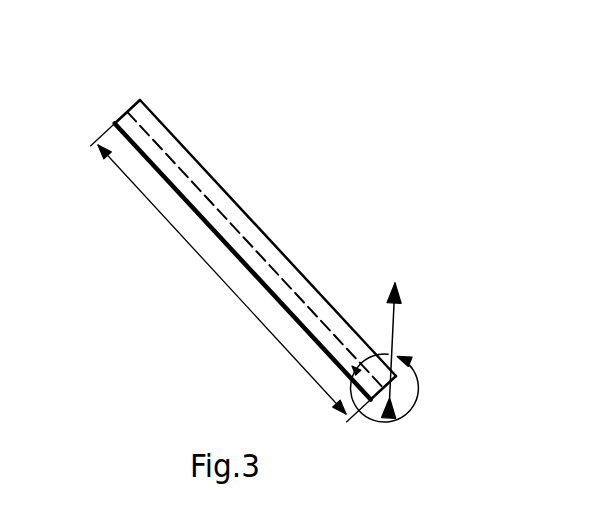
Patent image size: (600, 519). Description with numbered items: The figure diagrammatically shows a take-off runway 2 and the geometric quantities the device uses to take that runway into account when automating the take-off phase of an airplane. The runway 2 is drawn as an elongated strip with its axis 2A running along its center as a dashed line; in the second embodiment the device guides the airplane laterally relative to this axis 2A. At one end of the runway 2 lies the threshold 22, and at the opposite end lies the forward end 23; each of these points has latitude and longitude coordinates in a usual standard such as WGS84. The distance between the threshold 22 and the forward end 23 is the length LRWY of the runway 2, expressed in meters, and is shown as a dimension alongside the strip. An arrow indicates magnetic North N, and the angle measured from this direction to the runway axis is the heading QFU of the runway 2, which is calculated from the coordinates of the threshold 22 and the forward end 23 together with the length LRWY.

The runway 2 is at (204, 169).
The axis of the runway 2A is at (272, 268).
The threshold 22 is at (389, 417).
The forward end 23 is at (112, 117).
The magnetic North N is at (395, 318).
The length of the runway LRWY is at (222, 279).
The heading of the runway QFU is at (413, 405).